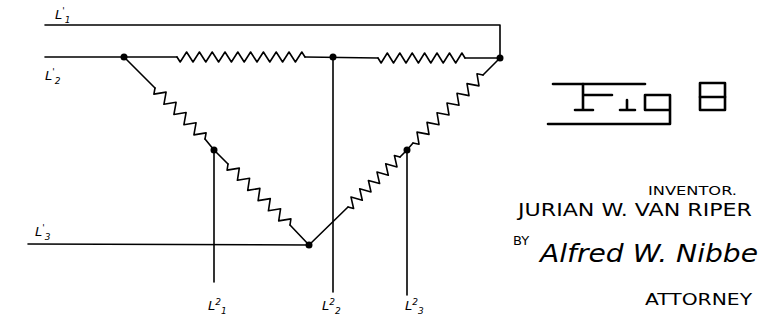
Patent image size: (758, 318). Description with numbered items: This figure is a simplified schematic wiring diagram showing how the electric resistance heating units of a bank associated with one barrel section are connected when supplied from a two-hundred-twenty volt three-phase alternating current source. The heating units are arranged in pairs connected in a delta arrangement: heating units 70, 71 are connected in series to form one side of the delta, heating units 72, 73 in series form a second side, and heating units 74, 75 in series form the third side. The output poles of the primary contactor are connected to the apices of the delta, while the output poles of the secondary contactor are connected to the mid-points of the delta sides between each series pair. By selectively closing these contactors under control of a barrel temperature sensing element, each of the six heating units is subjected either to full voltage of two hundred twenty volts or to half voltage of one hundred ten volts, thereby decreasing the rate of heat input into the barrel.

The heating unit 70 is at (253, 63).
The heating unit 71 is at (406, 65).
The heating unit 72 is at (452, 113).
The heating unit 73 is at (411, 150).
The heating unit 74 is at (270, 196).
The heating unit 75 is at (200, 108).